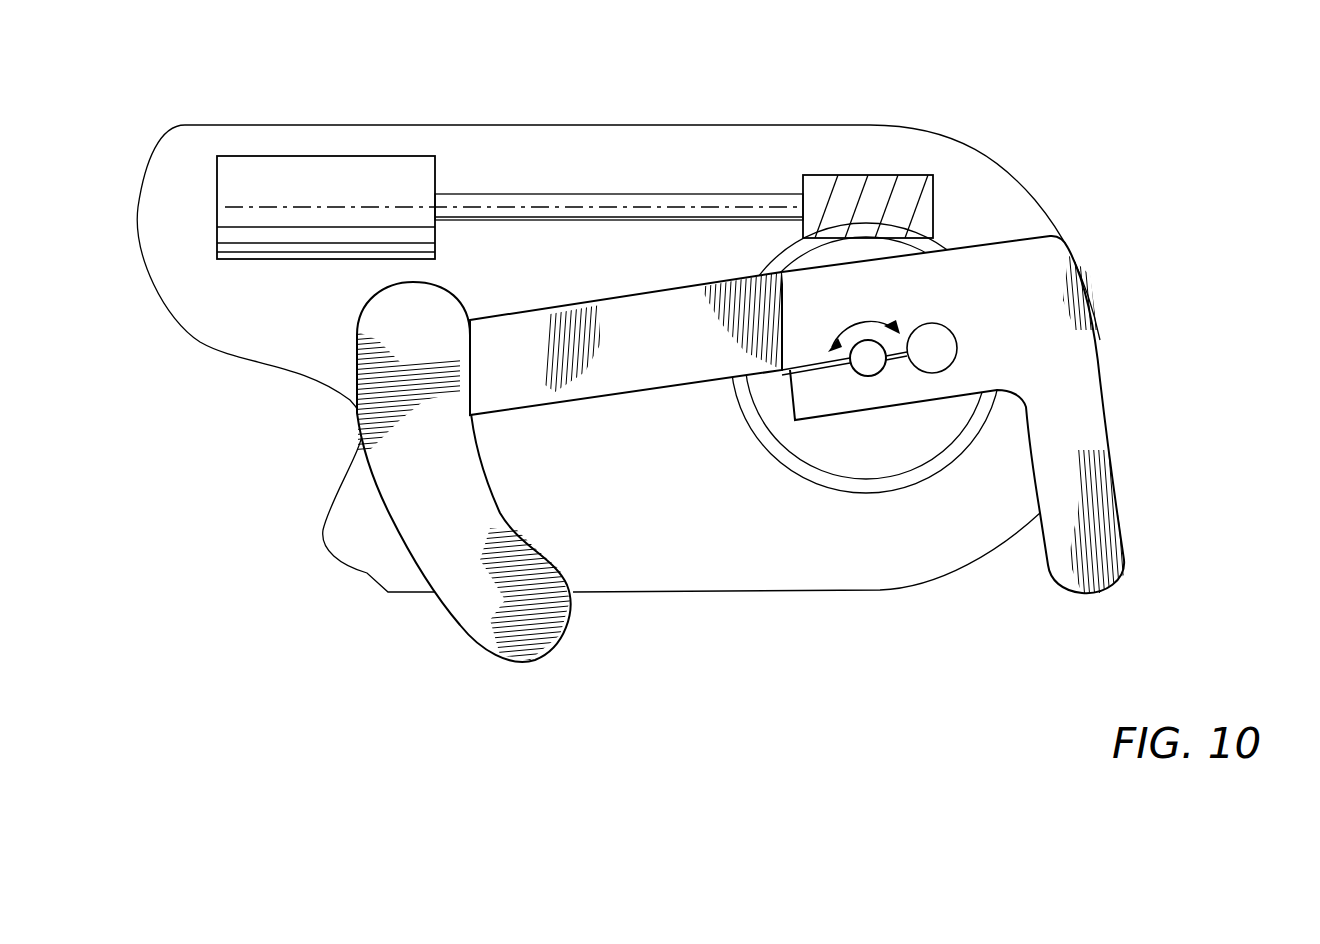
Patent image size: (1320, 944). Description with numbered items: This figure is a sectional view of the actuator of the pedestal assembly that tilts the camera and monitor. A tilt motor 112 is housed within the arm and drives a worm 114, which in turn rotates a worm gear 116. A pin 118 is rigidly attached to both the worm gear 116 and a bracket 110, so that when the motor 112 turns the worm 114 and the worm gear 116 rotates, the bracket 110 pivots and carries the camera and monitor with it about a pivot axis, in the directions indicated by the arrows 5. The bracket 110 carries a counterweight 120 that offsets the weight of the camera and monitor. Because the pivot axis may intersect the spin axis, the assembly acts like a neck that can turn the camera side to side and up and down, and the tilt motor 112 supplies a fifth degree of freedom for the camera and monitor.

The bracket 110 is at (668, 355).
The tilt motor 112 is at (310, 175).
The worm 114 is at (868, 207).
The worm gear 116 is at (872, 452).
The pin 118 is at (873, 362).
The counterweight 120 is at (460, 573).
The arrows 5 is at (864, 321).